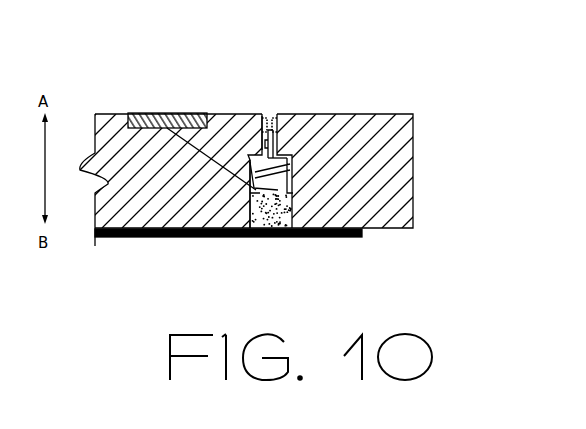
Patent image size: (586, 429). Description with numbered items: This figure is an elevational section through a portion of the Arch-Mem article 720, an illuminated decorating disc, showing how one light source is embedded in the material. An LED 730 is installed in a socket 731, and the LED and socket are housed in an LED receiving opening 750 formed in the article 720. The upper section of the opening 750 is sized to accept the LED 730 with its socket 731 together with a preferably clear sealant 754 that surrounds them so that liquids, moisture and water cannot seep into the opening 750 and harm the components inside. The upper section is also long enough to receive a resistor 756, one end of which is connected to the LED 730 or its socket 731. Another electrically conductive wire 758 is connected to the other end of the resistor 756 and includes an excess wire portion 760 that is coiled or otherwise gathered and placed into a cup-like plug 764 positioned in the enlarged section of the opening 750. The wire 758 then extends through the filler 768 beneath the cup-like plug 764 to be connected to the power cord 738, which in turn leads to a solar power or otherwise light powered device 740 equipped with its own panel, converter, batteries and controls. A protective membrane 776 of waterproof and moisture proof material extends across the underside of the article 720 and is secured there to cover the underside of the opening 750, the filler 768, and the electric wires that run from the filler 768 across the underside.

The Arch-Mem article 720 is at (246, 113).
The solar power or light powered device 740 is at (164, 111).
The LED 730 is at (290, 114).
The socket 731 is at (263, 113).
The sealant 754 is at (280, 124).
The resistor 756 is at (276, 141).
The electrically conductive wire 758 is at (284, 157).
The excess wire portion 760 is at (289, 166).
The cup-like plug 764 is at (292, 181).
The filler 768 is at (292, 207).
The LED receiving opening 750 is at (245, 213).
The power cord 738 is at (208, 160).
The protective membrane 776 is at (310, 239).